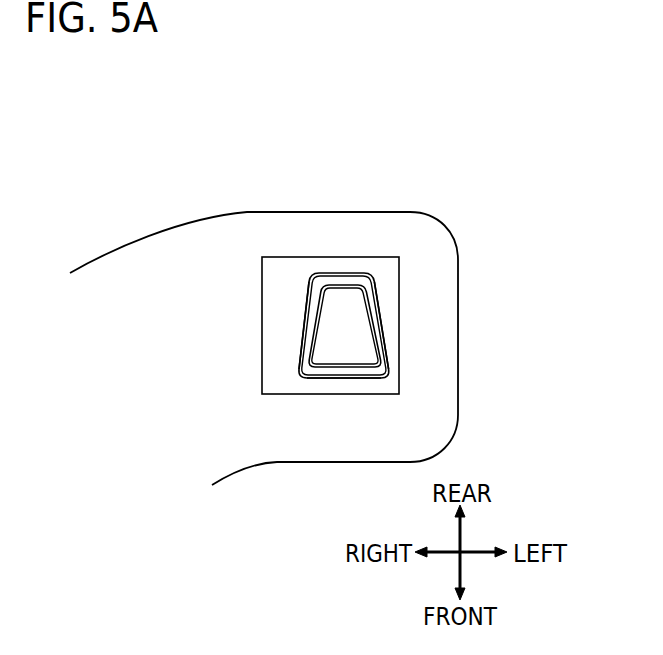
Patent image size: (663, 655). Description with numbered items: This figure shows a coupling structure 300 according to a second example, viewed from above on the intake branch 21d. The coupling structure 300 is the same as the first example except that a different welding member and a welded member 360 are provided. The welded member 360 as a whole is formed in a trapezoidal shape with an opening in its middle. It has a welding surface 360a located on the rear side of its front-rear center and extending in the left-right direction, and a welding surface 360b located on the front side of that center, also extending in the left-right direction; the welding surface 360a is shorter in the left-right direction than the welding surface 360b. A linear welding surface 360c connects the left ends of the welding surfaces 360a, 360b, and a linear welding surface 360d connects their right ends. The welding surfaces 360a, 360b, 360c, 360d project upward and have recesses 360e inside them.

The coupling structure 300 is at (347, 108).
The intake branch 21d is at (160, 232).
The welded member 360 is at (312, 262).
The welding surface 360a is at (345, 285).
The welding surface 360b is at (345, 378).
The welding surface 360c is at (387, 326).
The welding surface 360d is at (305, 328).
The recess 360e is at (380, 278).